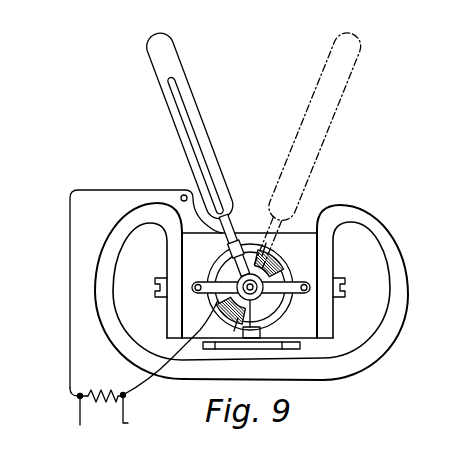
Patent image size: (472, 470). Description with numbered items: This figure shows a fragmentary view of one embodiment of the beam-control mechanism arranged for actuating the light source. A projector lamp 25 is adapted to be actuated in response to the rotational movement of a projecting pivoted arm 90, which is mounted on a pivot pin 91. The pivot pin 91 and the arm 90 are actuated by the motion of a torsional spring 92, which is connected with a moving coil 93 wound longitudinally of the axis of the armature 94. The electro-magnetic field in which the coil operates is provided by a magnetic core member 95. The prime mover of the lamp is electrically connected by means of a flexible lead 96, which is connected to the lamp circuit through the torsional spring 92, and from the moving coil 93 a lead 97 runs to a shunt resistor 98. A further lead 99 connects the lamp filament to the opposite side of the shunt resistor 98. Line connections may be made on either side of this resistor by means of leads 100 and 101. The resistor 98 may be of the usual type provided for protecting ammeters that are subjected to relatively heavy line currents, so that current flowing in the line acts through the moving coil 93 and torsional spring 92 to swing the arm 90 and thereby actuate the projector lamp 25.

The projector lamp 25 is at (165, 67).
The projecting pivoted arm 90 is at (233, 225).
The pivot pin 91 is at (250, 314).
The torsional spring 92 is at (263, 302).
The moving coil 93 is at (275, 260).
The armature 94 is at (218, 300).
The magnetic core member 95 is at (120, 233).
The flexible lead 96 is at (240, 247).
The lead 97 is at (143, 383).
The shunt resistor 98 is at (90, 390).
The lead 99 is at (92, 188).
The lead 100 is at (78, 418).
The lead 101 is at (128, 422).